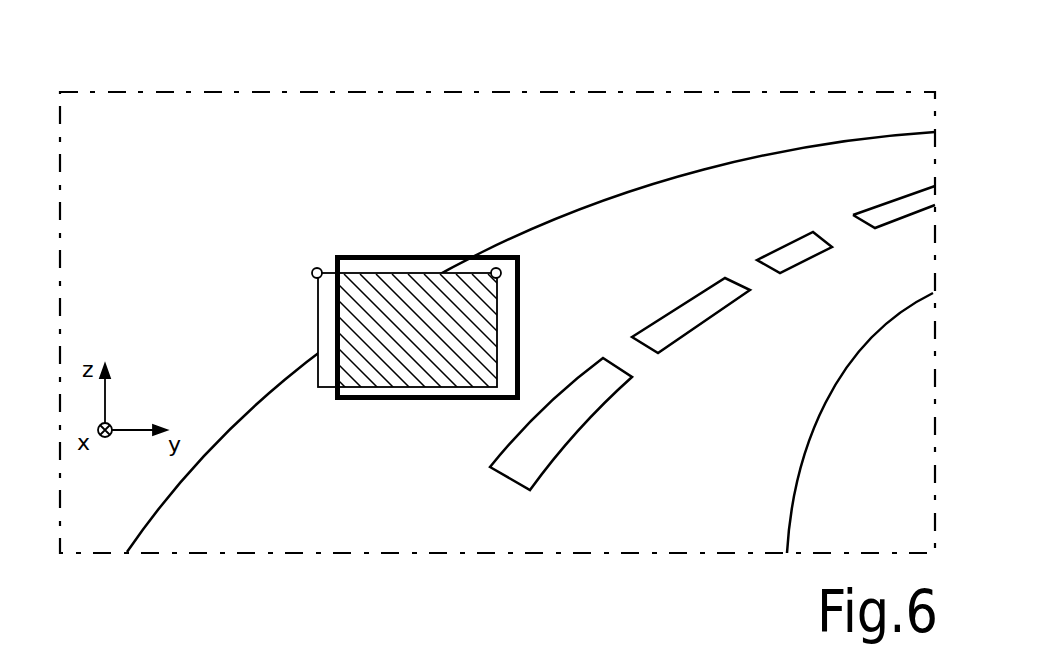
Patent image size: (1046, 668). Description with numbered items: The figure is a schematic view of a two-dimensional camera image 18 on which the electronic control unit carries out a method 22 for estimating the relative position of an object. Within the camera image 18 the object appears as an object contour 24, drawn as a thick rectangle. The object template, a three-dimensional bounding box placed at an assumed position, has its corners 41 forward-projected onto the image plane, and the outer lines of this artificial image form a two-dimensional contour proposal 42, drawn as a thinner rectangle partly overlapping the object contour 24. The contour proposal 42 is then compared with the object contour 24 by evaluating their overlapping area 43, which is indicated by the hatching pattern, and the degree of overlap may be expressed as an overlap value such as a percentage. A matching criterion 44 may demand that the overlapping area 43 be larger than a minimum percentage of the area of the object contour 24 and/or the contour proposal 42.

The 2D camera image 18 is at (350, 92).
The method 22 is at (528, 97).
The object contour 24 is at (520, 293).
The corners 41 is at (316, 268).
The two-dimensional contour proposal 42 is at (318, 313).
The overlapping area 43 is at (393, 370).
The matching criterion 44 is at (519, 325).